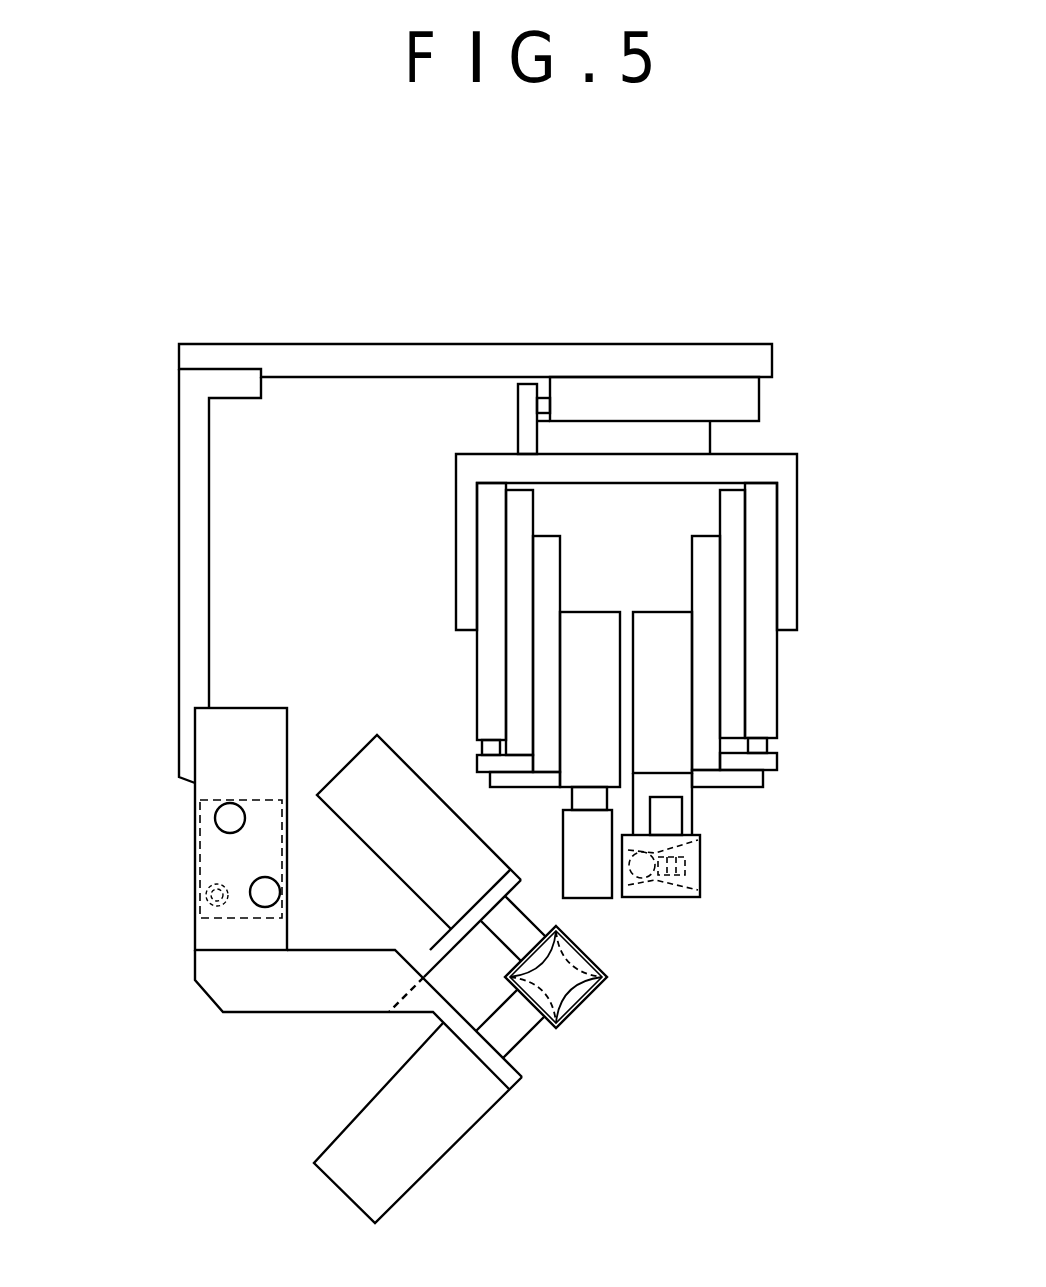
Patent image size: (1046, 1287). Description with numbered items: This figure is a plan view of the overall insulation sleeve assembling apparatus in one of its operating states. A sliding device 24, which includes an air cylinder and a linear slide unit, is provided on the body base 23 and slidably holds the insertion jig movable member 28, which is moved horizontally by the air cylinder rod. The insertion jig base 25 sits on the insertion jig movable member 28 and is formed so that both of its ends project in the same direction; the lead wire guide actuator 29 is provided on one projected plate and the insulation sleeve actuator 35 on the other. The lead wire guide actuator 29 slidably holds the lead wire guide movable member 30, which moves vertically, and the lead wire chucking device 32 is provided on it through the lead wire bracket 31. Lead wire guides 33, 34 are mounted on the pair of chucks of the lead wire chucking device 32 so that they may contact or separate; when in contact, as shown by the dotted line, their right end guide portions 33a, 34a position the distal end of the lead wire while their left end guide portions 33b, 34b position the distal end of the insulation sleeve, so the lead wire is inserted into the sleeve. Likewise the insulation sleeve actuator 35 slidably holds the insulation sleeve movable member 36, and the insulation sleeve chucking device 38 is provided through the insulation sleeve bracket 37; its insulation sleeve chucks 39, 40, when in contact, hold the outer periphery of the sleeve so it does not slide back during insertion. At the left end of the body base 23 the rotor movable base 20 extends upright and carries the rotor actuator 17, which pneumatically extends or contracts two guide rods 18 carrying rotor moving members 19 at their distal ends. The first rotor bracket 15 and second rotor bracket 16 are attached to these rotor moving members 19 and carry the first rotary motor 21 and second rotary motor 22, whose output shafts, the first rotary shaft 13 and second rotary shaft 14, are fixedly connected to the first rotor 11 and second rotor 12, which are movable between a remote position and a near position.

The first rotor 11 is at (605, 968).
The second rotor 12 is at (592, 1012).
The first rotary shaft 13 is at (513, 1035).
The second rotary shaft 14 is at (538, 920).
The first rotor bracket 15 is at (442, 1022).
The second rotor bracket 16 is at (440, 940).
The rotor actuator 17 is at (222, 860).
The guide rods 18 is at (222, 818).
The rotor moving members 19 is at (213, 733).
The rotor movable base 20 is at (180, 505).
The first rotary motor 21 is at (440, 1140).
The second rotary motor 22 is at (378, 750).
The body base 23 is at (470, 355).
The sliding device 24 is at (700, 395).
The insertion jig base 25 is at (790, 487).
The insertion jig movable member 28 is at (703, 437).
The lead wire guide actuator 29 is at (760, 548).
The lead wire guide movable member 30 is at (735, 652).
The lead wire bracket 31 is at (705, 715).
The lead wire chucking device 32 is at (668, 627).
The lead wire guide 33 is at (763, 885).
The lead wire guide 34 is at (763, 885).
The guide portion 33a is at (767, 881).
The guide portion 34a is at (700, 870).
The guide portion 33b is at (781, 905).
The guide portion 34b is at (700, 890).
The insulation sleeve actuator 35 is at (493, 565).
The insulation sleeve movable member 36 is at (523, 655).
The insulation sleeve bracket 37 is at (528, 508).
The insulation sleeve chucking device 38 is at (597, 627).
The insulation sleeve chuck 39 is at (641, 883).
The insulation sleeve chuck 40 is at (583, 888).